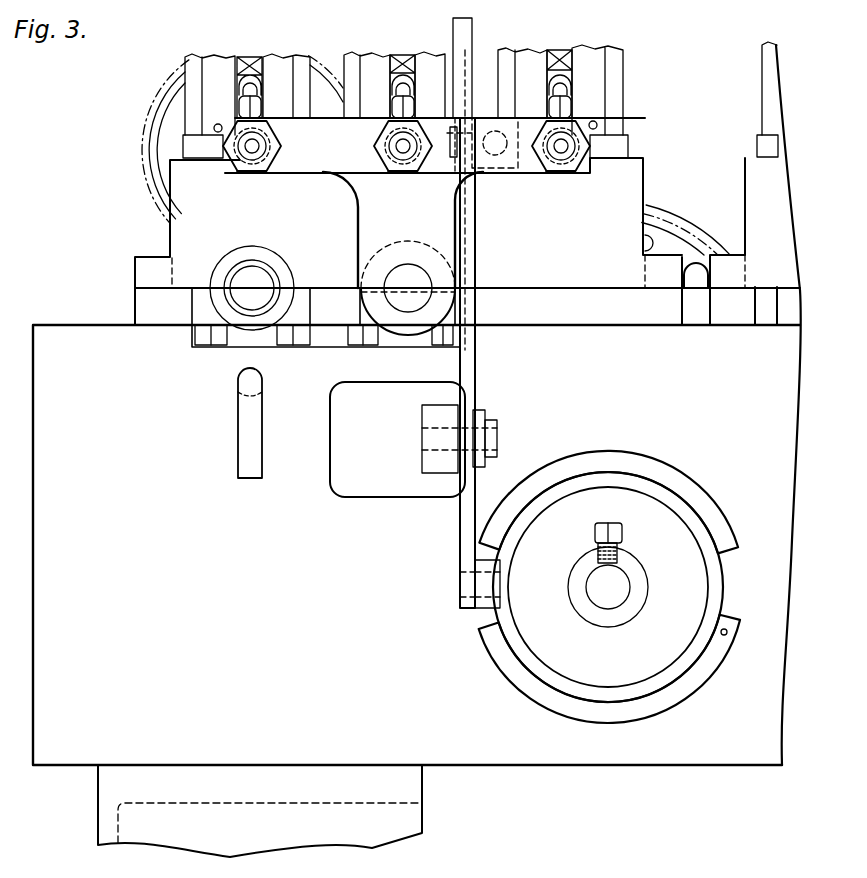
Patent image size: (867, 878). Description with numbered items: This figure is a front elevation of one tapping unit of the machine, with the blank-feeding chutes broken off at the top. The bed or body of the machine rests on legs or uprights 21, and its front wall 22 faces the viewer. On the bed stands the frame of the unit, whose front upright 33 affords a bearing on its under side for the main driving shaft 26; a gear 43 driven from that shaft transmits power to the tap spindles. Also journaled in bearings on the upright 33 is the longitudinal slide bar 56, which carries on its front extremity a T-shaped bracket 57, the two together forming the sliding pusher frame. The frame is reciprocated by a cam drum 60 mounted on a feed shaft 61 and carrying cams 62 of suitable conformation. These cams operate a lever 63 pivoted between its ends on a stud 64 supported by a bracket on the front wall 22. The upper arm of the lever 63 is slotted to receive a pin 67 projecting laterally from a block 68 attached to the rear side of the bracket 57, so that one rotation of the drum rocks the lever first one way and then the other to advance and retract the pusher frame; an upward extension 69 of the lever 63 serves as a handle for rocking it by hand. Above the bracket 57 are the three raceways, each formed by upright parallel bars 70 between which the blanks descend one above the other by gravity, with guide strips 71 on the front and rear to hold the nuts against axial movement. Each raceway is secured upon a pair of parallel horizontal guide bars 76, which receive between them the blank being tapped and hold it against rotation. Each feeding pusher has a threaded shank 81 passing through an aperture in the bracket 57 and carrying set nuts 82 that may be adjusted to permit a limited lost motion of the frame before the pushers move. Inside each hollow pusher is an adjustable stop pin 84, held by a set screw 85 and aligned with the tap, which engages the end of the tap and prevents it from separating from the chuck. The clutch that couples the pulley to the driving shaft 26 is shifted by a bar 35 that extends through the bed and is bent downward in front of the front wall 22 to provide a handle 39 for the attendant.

The legs or uprights 21 is at (420, 820).
The front wall 22 is at (573, 767).
The main driving shaft 26 is at (267, 283).
The upright 33 is at (643, 182).
The bar 35 is at (262, 393).
The handle 39 is at (240, 428).
The gear 43 is at (140, 168).
The longitudinal bar 56 is at (420, 275).
The T-shaped bracket 57 is at (440, 203).
The cam drum 60 is at (657, 495).
The feed shaft 61 is at (605, 600).
The cams 62 is at (712, 515).
The lever 63 is at (467, 372).
The stud 64 is at (497, 437).
The pin 67 is at (455, 160).
The block 68 is at (520, 168).
The upward extension 69 is at (473, 22).
The upright parallel bars 70 is at (195, 57).
The guide strips 71 is at (273, 65).
The guide bars 76 is at (197, 153).
The threaded shank 81 is at (238, 165).
The set nut 82 is at (374, 147).
The stop pin 84 is at (257, 152).
The set screw 85 is at (262, 103).